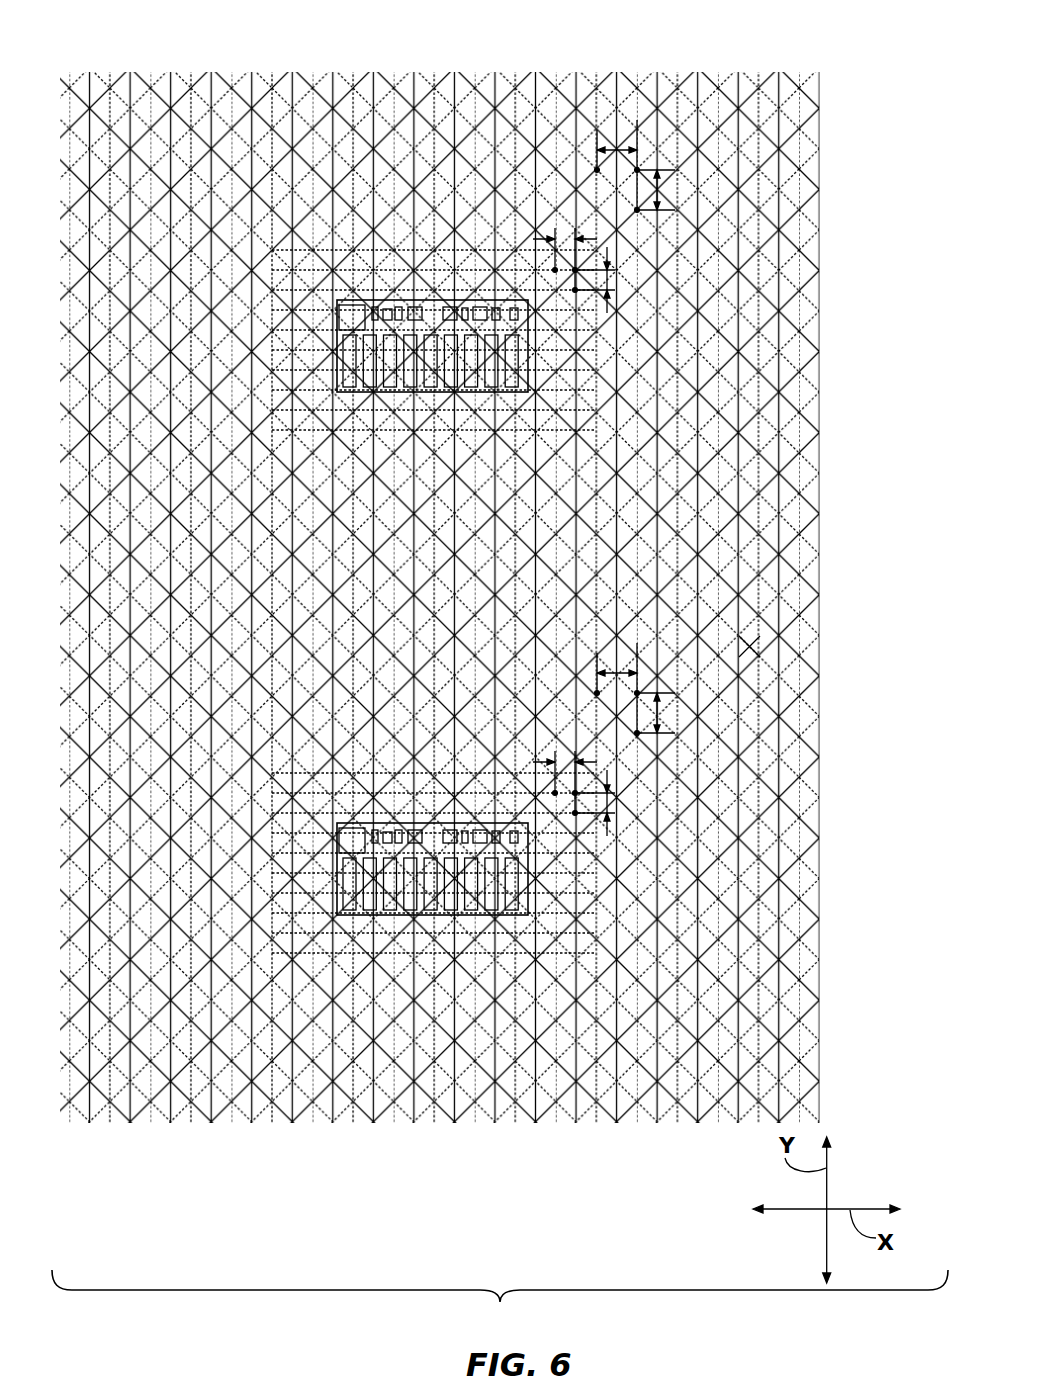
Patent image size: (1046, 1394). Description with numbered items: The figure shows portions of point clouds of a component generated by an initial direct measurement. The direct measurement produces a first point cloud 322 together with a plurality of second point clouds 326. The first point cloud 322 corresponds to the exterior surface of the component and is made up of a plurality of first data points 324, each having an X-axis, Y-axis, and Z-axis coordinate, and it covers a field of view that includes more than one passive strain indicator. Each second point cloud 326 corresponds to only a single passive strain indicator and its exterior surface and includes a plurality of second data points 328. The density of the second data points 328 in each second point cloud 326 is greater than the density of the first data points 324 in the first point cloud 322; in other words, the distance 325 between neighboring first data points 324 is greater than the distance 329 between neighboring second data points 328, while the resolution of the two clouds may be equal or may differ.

The first point cloud 322 is at (841, 618).
The first data points 324 is at (742, 636).
The distance between neighboring first data points 325 is at (600, 145).
The second point cloud 326 is at (598, 393).
The second data points 328 is at (548, 396).
The distance between neighboring second data points 329 is at (548, 236).